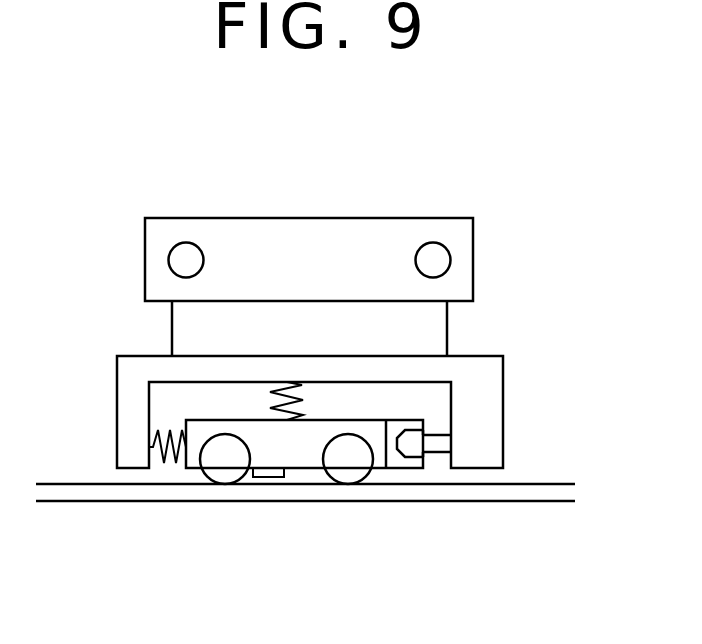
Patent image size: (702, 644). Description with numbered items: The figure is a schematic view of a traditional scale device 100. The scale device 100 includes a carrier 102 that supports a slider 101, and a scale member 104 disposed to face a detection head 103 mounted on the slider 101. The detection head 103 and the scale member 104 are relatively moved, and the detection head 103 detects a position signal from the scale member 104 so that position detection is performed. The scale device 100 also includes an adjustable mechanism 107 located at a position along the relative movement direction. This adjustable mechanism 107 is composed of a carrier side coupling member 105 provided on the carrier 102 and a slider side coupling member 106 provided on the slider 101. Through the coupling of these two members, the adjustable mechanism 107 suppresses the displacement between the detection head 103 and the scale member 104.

The scale device 100 is at (315, 159).
The slider 101 is at (355, 428).
The carrier 102 is at (484, 383).
The detection head 103 is at (270, 477).
The scale member 104 is at (543, 492).
The carrier side coupling member 105 is at (436, 445).
The slider side coupling member 106 is at (395, 462).
The adjustable mechanism 107 is at (435, 524).